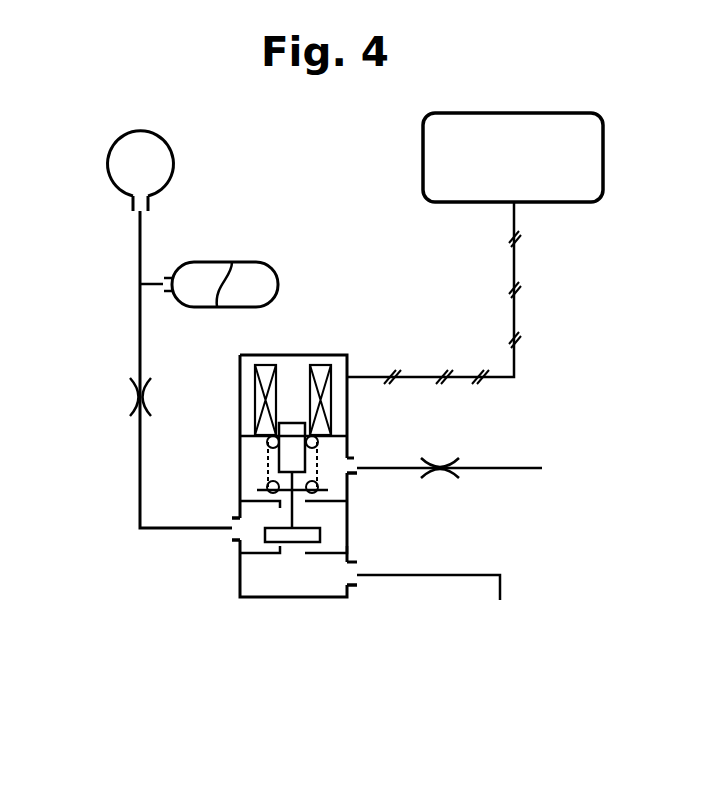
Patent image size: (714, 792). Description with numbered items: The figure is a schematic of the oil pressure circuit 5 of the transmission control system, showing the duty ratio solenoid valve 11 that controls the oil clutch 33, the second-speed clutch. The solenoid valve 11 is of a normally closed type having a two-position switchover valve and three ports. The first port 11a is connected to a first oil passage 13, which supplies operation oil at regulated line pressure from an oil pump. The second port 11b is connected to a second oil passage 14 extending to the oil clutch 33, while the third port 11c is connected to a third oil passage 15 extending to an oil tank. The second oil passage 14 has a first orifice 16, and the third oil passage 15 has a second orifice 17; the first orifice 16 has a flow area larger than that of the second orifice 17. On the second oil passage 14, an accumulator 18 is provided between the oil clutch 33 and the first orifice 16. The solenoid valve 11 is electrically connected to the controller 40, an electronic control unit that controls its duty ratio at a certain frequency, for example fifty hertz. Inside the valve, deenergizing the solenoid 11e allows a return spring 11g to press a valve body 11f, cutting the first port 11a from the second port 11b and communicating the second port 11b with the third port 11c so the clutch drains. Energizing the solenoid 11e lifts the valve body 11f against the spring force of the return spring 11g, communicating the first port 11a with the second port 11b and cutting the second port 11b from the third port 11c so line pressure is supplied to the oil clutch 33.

The oil pressure circuit 5 is at (70, 198).
The oil clutch 33 is at (174, 166).
The accumulator 18 is at (241, 262).
The controller 40 is at (571, 204).
The first orifice 16 is at (130, 390).
The second oil passage 14 is at (138, 478).
The third oil passage 15 is at (508, 467).
The second orifice 17 is at (446, 465).
The first oil passage 13 is at (440, 573).
The solenoid valve 11 is at (240, 585).
The solenoid 11e is at (331, 420).
The return spring 11g is at (268, 458).
The valve body 11f is at (293, 545).
The second port 11b is at (240, 540).
The third port 11c is at (358, 474).
The first port 11a is at (358, 587).